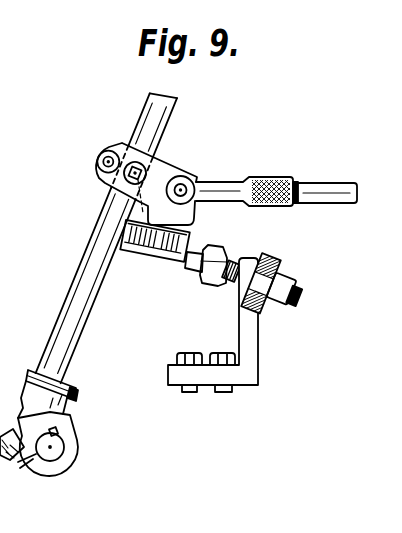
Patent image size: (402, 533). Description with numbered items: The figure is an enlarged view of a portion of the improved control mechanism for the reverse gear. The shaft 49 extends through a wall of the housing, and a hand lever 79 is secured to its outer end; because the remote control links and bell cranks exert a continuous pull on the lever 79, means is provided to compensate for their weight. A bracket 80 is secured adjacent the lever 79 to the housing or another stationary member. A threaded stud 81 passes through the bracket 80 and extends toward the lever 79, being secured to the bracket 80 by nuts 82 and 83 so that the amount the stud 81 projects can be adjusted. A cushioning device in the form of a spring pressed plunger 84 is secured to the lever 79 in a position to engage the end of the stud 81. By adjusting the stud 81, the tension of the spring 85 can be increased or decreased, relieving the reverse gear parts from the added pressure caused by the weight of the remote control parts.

The hand lever 79 is at (152, 134).
The spring 85 is at (143, 257).
The spring pressed plunger 84 is at (191, 270).
The threaded stud 81 is at (222, 281).
The nut 82 is at (237, 296).
The nut 83 is at (281, 308).
The bracket 80 is at (247, 345).
The shaft 49 is at (52, 447).